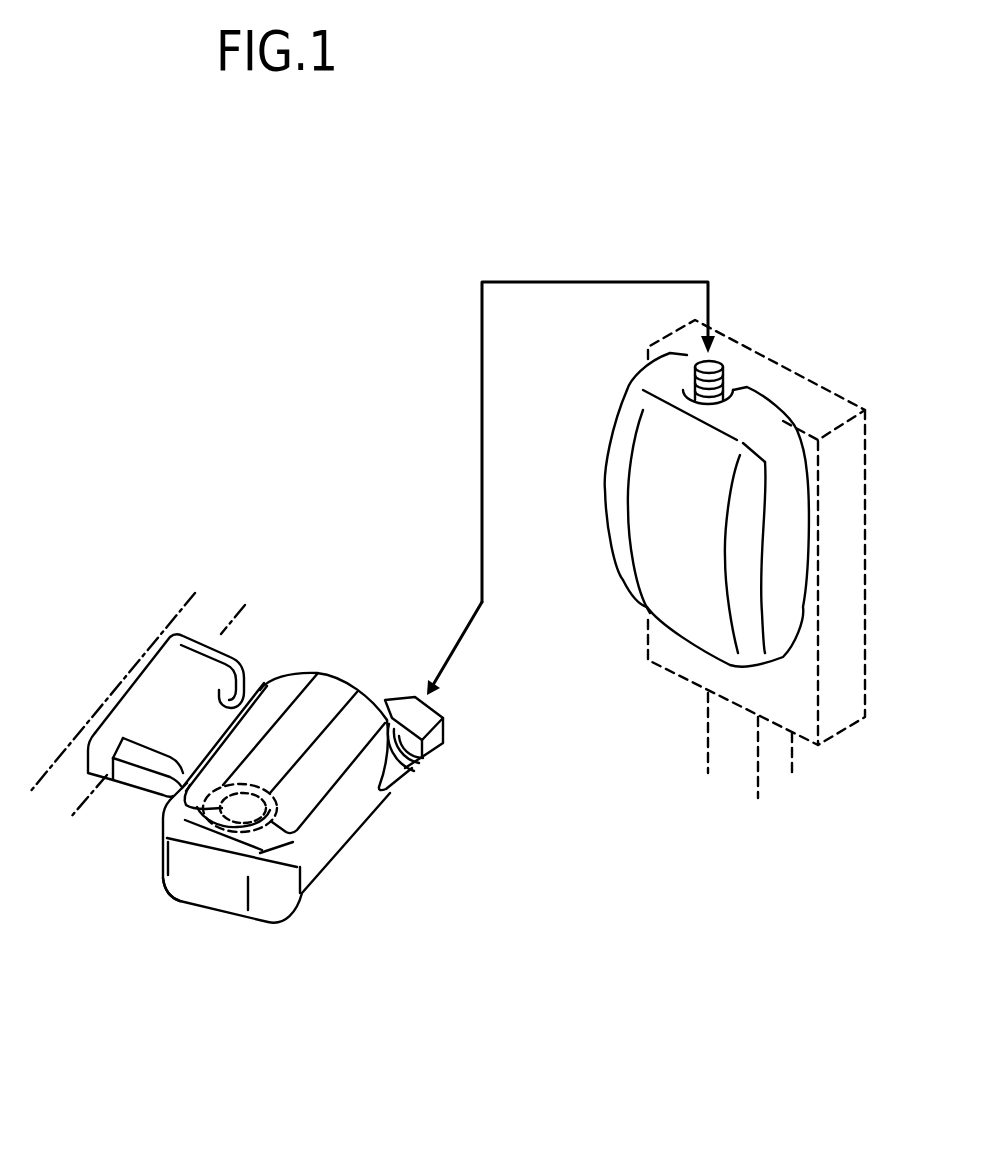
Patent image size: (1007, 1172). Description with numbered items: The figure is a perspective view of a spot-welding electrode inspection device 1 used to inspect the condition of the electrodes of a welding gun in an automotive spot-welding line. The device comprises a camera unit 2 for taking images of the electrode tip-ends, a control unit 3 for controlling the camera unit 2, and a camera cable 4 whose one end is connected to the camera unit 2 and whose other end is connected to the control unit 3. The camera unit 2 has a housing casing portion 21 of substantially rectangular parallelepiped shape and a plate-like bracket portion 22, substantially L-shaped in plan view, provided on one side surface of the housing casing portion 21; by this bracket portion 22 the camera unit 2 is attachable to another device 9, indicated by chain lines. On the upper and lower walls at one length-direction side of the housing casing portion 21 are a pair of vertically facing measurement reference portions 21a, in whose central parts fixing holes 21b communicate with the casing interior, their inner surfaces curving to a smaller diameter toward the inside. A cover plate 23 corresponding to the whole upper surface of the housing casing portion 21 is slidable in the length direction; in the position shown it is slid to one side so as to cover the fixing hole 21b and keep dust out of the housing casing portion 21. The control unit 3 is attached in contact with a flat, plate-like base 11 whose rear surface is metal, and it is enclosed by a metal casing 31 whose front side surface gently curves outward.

The spot-welding electrode inspection device 1 is at (780, 146).
The camera unit 2 is at (400, 866).
The control unit 3 is at (590, 571).
The camera cable 4 is at (575, 281).
The another device 9 is at (237, 623).
The base 11 is at (805, 378).
The housing casing portion 21 is at (237, 924).
The measurement reference portion 21a is at (172, 891).
The fixing hole 21b is at (232, 842).
The bracket portion 22 is at (145, 792).
The cover plate 23 is at (327, 700).
The casing 31 is at (605, 434).